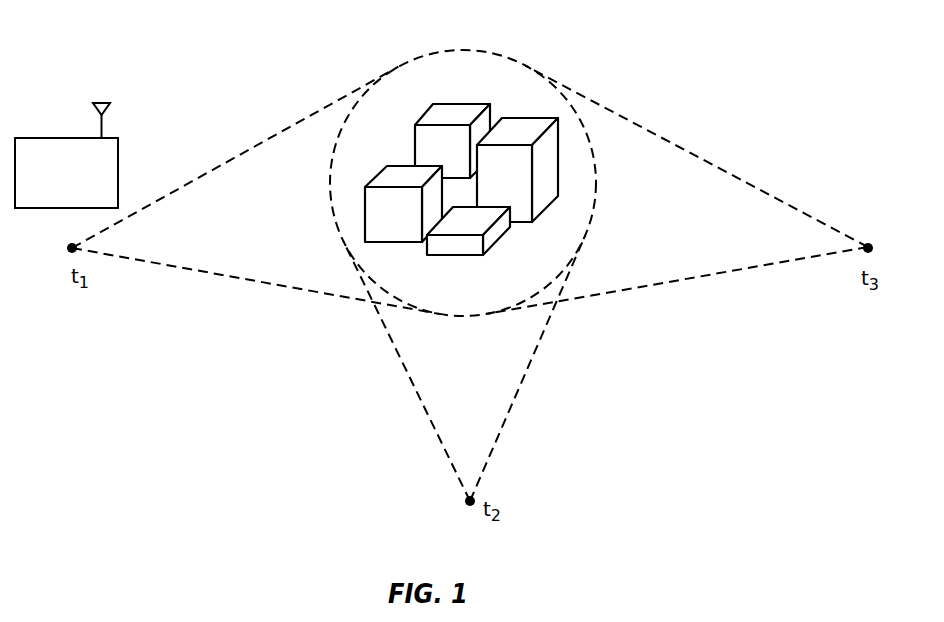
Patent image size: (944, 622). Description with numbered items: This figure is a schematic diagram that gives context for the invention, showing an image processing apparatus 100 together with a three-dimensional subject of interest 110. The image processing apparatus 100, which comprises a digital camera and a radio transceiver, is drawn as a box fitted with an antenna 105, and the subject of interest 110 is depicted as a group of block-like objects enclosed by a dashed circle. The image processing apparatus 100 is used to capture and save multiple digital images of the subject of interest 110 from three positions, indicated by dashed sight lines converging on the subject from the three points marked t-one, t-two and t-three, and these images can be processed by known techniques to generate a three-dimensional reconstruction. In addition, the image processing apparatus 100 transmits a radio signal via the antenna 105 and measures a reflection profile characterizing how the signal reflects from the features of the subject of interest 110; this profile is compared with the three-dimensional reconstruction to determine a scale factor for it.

The image processing apparatus 100 is at (87, 185).
The antenna 105 is at (101, 103).
The subject of interest 110 is at (492, 51).